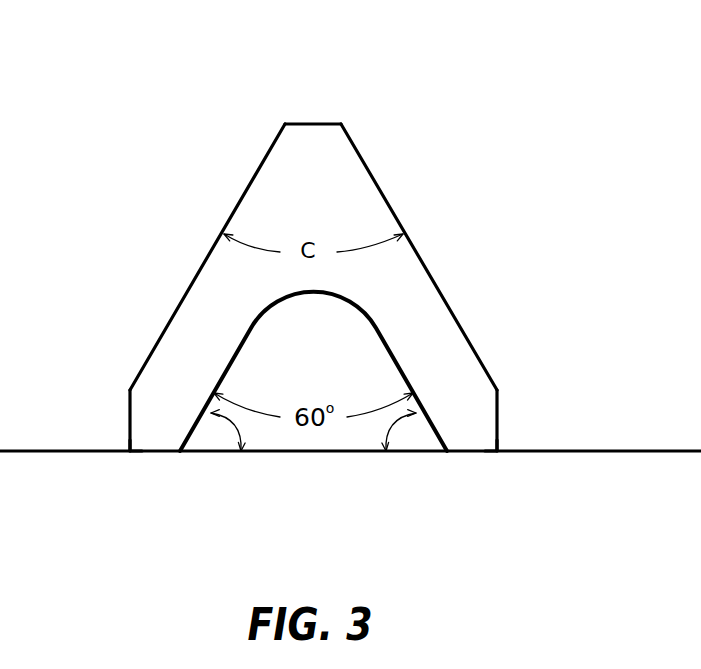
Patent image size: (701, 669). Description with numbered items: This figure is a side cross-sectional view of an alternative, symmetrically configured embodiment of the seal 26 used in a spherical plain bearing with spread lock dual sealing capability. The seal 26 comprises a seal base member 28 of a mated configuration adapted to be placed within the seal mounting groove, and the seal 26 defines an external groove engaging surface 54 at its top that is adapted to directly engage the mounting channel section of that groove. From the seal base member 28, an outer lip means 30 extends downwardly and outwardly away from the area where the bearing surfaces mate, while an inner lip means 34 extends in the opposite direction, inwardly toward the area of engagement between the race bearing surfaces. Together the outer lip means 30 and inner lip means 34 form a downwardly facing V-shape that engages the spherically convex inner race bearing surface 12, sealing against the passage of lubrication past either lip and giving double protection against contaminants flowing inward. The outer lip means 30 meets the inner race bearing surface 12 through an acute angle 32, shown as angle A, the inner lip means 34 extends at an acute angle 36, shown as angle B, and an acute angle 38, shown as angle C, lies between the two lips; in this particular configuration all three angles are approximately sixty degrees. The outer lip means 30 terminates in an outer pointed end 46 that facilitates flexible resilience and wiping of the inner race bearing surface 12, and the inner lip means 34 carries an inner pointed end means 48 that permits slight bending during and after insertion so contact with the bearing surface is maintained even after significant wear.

The inner race bearing surface 12 is at (357, 451).
The seal 26 is at (373, 173).
The seal base member 28 is at (298, 148).
The outer lip means 30 is at (468, 397).
The acute angle A 32 is at (403, 427).
The inner lip means 34 is at (157, 400).
The acute angle B 36 is at (224, 427).
The acute angle C 38 is at (263, 247).
The outer pointed end 46 is at (497, 452).
The inner pointed end means 48 is at (130, 440).
The external groove engaging surface 54 is at (325, 124).